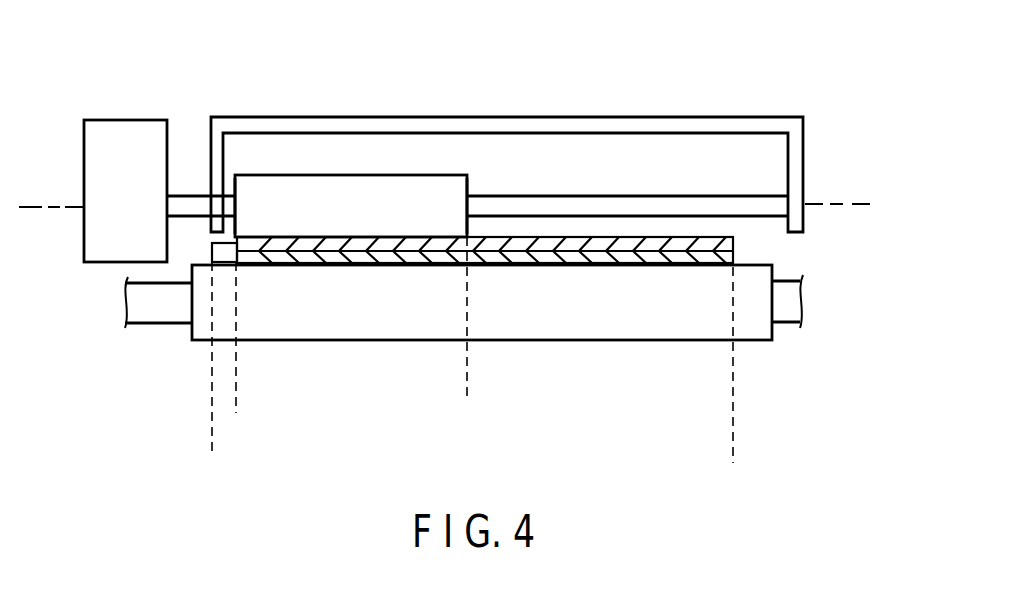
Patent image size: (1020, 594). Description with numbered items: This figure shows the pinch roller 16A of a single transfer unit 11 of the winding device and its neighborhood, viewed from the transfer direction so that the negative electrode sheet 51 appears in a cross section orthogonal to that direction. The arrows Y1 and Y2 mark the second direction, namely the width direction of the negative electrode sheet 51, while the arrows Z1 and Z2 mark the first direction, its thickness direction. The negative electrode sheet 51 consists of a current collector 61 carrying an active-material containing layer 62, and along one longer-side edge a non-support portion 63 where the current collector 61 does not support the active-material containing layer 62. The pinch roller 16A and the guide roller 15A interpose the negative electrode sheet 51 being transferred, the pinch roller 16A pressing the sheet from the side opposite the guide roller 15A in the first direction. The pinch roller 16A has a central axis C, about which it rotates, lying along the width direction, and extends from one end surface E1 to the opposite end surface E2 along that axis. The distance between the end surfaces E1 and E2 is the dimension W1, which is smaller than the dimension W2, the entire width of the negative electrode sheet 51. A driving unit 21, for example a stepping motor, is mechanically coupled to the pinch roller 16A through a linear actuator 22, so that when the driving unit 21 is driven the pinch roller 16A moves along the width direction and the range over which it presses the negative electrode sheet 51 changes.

The transfer unit 11 is at (846, 124).
The driving unit 21 is at (125, 127).
The linear actuator 22 is at (598, 196).
The pinch roller 16A is at (348, 180).
The end surface E1 is at (235, 187).
The end surface E2 is at (467, 187).
The negative electrode sheet 51 is at (652, 224).
The current collector 61 is at (545, 266).
The active-material containing layer 62 is at (655, 266).
The non-support portion 63 is at (212, 250).
The guide roller 15A is at (598, 341).
The dimension of the pinch roller W1 is at (467, 387).
The dimension of the band body W2 is at (733, 438).
The arrow Y1 is at (625, 42).
The arrow Y2 is at (694, 42).
The arrow Z1 is at (875, 328).
The arrow Z2 is at (875, 393).
The central axis C is at (838, 210).